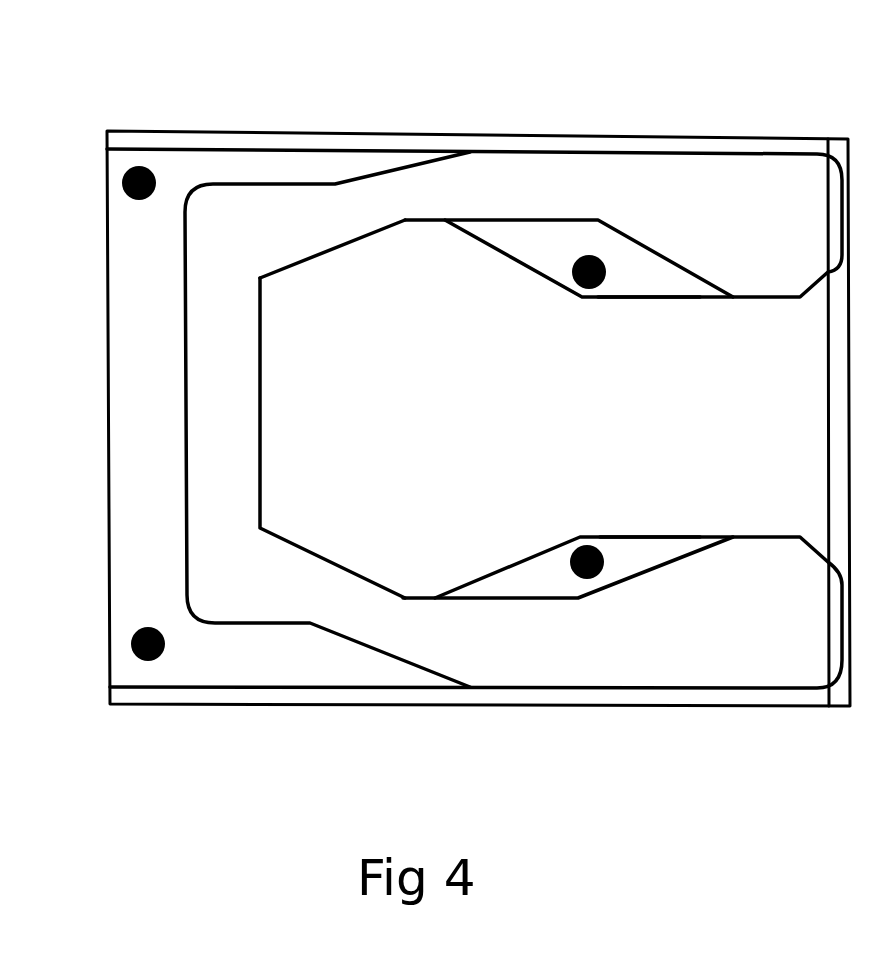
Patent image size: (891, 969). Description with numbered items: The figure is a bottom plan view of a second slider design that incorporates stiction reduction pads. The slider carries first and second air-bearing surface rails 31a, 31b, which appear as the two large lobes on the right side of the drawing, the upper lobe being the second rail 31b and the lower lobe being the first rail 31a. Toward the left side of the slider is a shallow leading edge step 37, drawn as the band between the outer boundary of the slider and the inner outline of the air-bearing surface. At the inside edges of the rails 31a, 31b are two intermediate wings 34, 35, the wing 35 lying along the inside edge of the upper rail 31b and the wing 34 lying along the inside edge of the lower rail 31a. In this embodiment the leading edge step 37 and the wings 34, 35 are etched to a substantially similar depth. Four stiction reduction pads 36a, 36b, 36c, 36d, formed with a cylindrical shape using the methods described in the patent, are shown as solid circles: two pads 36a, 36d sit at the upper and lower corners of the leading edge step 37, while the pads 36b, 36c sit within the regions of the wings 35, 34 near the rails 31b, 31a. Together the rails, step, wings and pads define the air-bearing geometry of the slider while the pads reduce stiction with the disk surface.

The first air-bearing surface rail 31a is at (476, 454).
The second air-bearing surface rail 31b is at (474, 418).
The intermediate wing 34 is at (648, 540).
The intermediate wing 35 is at (636, 280).
The stiction reduction pad 36a is at (136, 167).
The stiction reduction pad 36b is at (577, 288).
The stiction reduction pad 36c is at (583, 545).
The stiction reduction pad 36d is at (130, 648).
The shallow leading edge step 37 is at (478, 418).